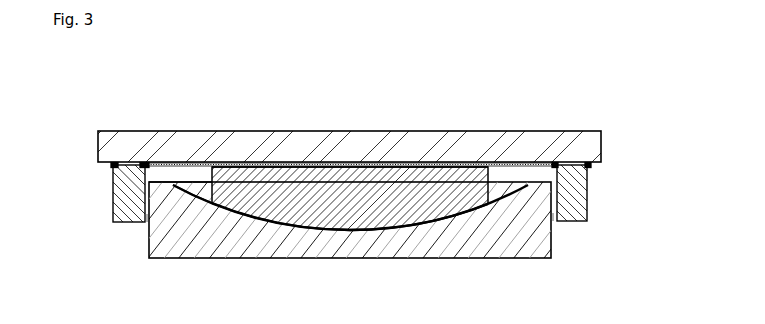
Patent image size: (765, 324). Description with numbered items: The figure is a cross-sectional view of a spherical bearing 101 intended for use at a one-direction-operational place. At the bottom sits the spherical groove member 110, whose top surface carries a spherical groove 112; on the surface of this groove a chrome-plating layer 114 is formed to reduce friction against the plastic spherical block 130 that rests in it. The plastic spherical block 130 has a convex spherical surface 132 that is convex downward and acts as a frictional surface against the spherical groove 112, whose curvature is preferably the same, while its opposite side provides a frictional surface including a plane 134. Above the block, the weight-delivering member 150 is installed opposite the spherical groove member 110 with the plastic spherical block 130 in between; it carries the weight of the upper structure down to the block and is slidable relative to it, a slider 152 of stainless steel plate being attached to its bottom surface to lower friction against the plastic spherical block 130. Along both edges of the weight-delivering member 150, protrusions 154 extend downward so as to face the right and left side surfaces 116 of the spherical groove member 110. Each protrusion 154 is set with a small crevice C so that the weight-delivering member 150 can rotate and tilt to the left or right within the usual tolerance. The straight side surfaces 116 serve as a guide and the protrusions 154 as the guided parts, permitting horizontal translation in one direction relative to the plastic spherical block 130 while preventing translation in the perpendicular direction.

The spherical bearing 101 is at (521, 102).
The spherical groove member 110 is at (530, 241).
The spherical groove 112 is at (444, 212).
The chrome-plating layer 114 is at (201, 197).
The side surfaces 116 is at (146, 195).
The plastic spherical block 130 is at (360, 190).
The convex spherical surface 132 is at (371, 231).
The plane 134 is at (318, 162).
The weight-delivering member 150 is at (441, 143).
The slider 152 is at (240, 168).
The protrusions 154 is at (127, 211).
The crevice C is at (147, 217).